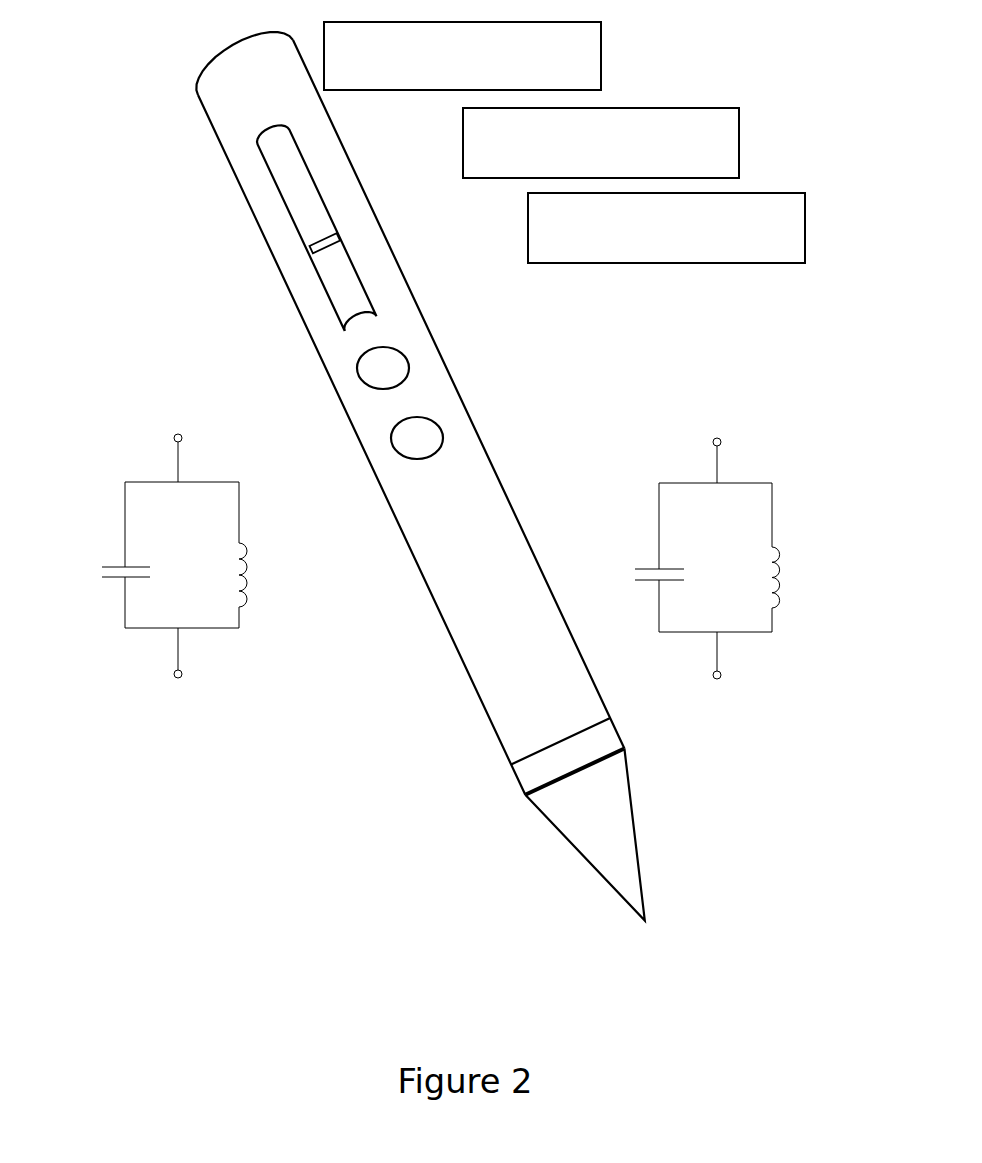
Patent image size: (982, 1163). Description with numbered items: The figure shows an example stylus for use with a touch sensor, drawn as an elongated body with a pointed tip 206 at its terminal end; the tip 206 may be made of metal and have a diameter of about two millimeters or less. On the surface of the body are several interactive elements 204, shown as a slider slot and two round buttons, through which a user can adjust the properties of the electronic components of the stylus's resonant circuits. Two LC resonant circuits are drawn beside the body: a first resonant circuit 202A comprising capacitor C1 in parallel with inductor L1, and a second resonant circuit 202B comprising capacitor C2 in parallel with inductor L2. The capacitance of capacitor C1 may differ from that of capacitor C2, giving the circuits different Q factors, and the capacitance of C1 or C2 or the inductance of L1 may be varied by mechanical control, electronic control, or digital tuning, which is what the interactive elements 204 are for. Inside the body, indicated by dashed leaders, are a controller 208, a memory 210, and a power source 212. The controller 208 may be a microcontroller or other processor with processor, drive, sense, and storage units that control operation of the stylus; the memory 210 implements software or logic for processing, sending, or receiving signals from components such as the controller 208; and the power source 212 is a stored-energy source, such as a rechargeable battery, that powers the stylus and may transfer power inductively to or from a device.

The resonant circuit 202A is at (245, 534).
The resonant circuit 202B is at (662, 534).
The interactive elements 204 is at (387, 438).
The tip 206 is at (645, 833).
The controller 208 is at (460, 472).
The memory 210 is at (462, 473).
The power source 212 is at (463, 472).
The capacitor C1 is at (73, 574).
The inductor L1 is at (270, 577).
The capacitor C2 is at (607, 575).
The inductor L2 is at (805, 582).